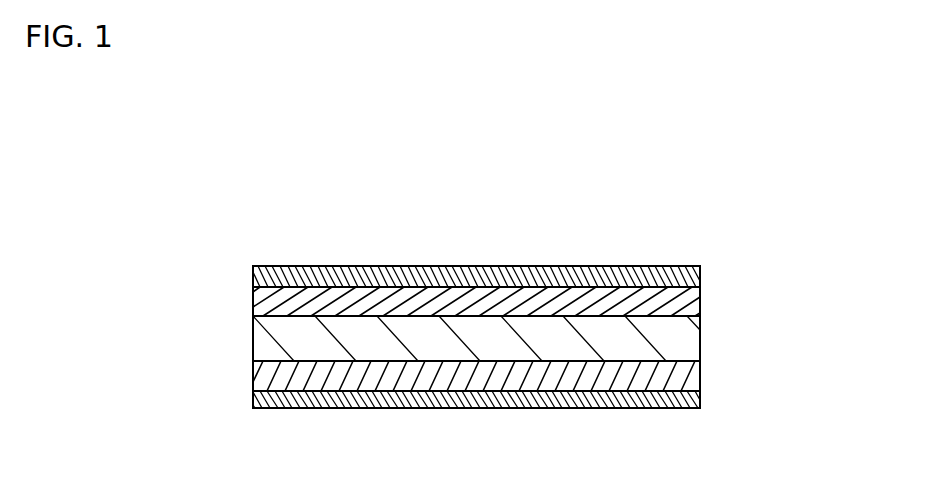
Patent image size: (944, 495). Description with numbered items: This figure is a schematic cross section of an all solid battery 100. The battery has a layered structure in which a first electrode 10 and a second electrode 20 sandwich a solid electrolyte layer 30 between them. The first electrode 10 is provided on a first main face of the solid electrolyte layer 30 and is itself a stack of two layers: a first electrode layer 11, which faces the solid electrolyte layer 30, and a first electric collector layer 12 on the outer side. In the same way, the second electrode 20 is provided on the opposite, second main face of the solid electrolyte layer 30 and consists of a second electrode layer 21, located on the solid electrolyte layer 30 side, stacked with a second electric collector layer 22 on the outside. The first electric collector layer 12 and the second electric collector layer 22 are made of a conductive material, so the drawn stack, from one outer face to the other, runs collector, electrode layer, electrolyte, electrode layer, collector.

The all solid battery 100 is at (868, 183).
The first electrode 10 is at (800, 355).
The first electrode layer 11 is at (688, 373).
The first electric collector layer 12 is at (688, 405).
The second electrode 20 is at (800, 247).
The second electrode layer 21 is at (697, 301).
The second electric collector layer 22 is at (694, 270).
The solid electrolyte layer 30 is at (268, 345).